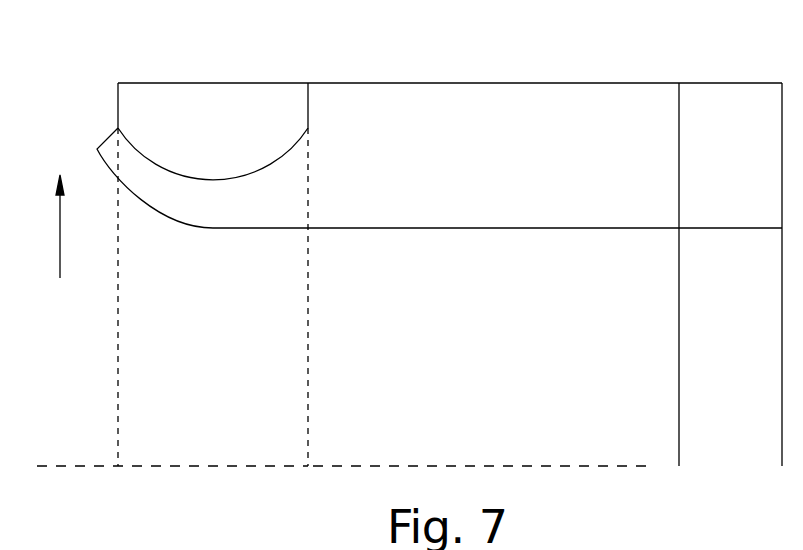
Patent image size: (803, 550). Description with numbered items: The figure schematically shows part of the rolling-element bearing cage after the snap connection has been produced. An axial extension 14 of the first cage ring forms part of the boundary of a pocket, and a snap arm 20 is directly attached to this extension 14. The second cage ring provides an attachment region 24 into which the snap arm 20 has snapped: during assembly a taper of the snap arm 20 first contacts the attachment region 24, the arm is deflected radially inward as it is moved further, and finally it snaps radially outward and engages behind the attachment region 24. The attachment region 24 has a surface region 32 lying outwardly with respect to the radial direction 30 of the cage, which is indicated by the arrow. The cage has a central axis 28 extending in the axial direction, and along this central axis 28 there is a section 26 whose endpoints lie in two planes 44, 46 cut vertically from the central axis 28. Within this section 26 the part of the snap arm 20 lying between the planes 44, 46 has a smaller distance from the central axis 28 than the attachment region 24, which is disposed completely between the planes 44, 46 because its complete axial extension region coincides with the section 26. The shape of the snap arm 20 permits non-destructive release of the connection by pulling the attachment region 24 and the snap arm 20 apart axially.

The axial extension 14 is at (505, 167).
The surface region 32 is at (212, 83).
The attachment region 24 is at (212, 135).
The snap arm 20 is at (174, 200).
The radial direction 30 is at (46, 226).
The plane 44 is at (103, 297).
The plane 46 is at (324, 297).
The section 26 is at (172, 453).
The central axis 28 is at (482, 452).